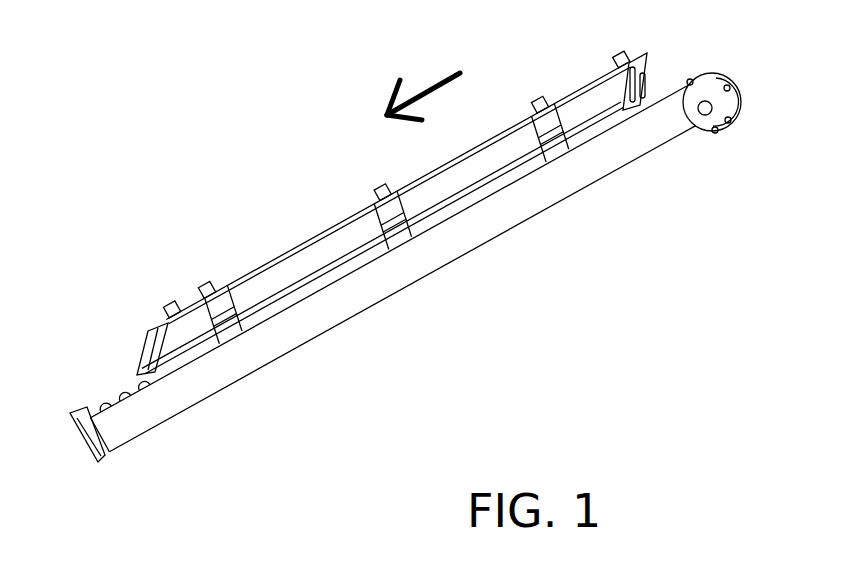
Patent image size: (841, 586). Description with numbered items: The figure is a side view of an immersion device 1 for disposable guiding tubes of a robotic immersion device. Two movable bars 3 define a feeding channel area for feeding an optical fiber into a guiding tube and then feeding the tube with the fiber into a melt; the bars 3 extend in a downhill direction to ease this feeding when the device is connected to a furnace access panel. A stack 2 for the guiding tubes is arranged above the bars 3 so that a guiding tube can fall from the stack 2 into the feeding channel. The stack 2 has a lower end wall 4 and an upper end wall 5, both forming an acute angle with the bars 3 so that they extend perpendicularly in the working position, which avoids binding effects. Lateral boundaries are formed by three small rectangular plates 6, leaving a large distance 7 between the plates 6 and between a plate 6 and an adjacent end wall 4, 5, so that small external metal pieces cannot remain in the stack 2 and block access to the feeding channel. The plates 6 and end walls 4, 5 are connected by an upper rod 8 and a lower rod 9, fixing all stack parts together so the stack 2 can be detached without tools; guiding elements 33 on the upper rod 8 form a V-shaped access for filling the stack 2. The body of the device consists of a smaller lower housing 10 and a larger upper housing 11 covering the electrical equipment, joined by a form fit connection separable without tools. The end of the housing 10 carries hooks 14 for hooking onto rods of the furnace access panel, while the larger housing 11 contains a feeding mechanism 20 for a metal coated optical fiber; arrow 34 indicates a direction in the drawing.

The immersion device 1 is at (310, 177).
The stack 2 is at (123, 357).
The movable bars 3 is at (372, 261).
The lower end wall 4 is at (148, 352).
The upper end wall 5 is at (648, 75).
The rectangular plates 6 is at (554, 118).
The distance 7 is at (605, 112).
The upper rod 8 is at (278, 258).
The lower rod 9 is at (312, 283).
The lower housing 10 is at (155, 405).
The upper housing 11 is at (633, 140).
The hooks 14 is at (70, 415).
The feeding mechanism 20 is at (714, 127).
The guiding elements 33 is at (205, 288).
The direction arrow 34 is at (423, 87).